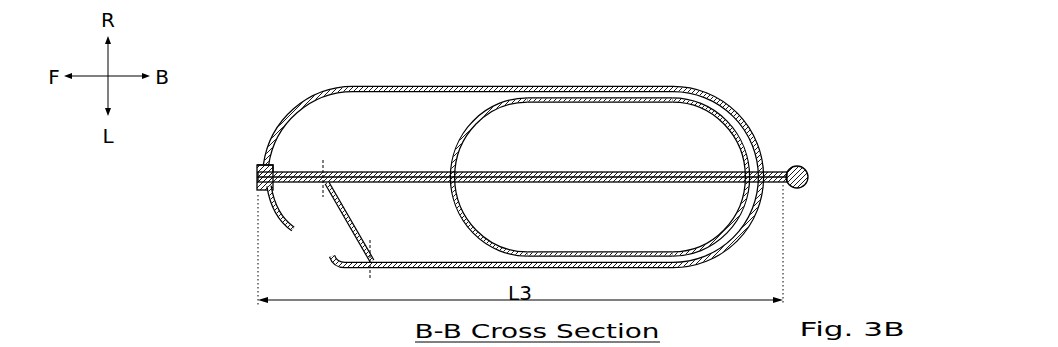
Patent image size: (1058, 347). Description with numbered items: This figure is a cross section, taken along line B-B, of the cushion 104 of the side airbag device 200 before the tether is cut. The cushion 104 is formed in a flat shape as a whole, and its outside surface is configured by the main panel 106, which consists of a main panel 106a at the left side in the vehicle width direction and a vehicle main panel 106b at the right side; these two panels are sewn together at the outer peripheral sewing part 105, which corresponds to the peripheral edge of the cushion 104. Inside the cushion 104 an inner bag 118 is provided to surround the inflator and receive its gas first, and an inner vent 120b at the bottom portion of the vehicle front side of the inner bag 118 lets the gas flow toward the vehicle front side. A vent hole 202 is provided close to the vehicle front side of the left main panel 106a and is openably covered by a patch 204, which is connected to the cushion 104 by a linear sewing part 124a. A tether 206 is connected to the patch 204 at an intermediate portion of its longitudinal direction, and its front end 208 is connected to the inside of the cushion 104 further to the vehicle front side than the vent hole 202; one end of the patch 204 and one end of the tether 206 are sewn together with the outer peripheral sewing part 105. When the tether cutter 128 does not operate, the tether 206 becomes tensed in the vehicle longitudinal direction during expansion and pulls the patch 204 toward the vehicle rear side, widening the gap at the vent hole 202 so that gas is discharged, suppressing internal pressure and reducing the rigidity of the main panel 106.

The side airbag device 200 is at (306, 63).
The cushion 104 is at (307, 104).
The outer peripheral sewing part 105 is at (264, 163).
The main panel 106 is at (787, 149).
The main panel 106a is at (755, 177).
The vehicle main panel 106b is at (723, 108).
The inner bag 118 is at (497, 100).
The inner vent 120b is at (458, 166).
The sewing part 124a is at (370, 248).
The tether cutter 128 is at (808, 178).
The vent hole 202 is at (293, 232).
The patch 204 is at (350, 204).
The tether 206 is at (610, 172).
The front end 208 is at (256, 178).